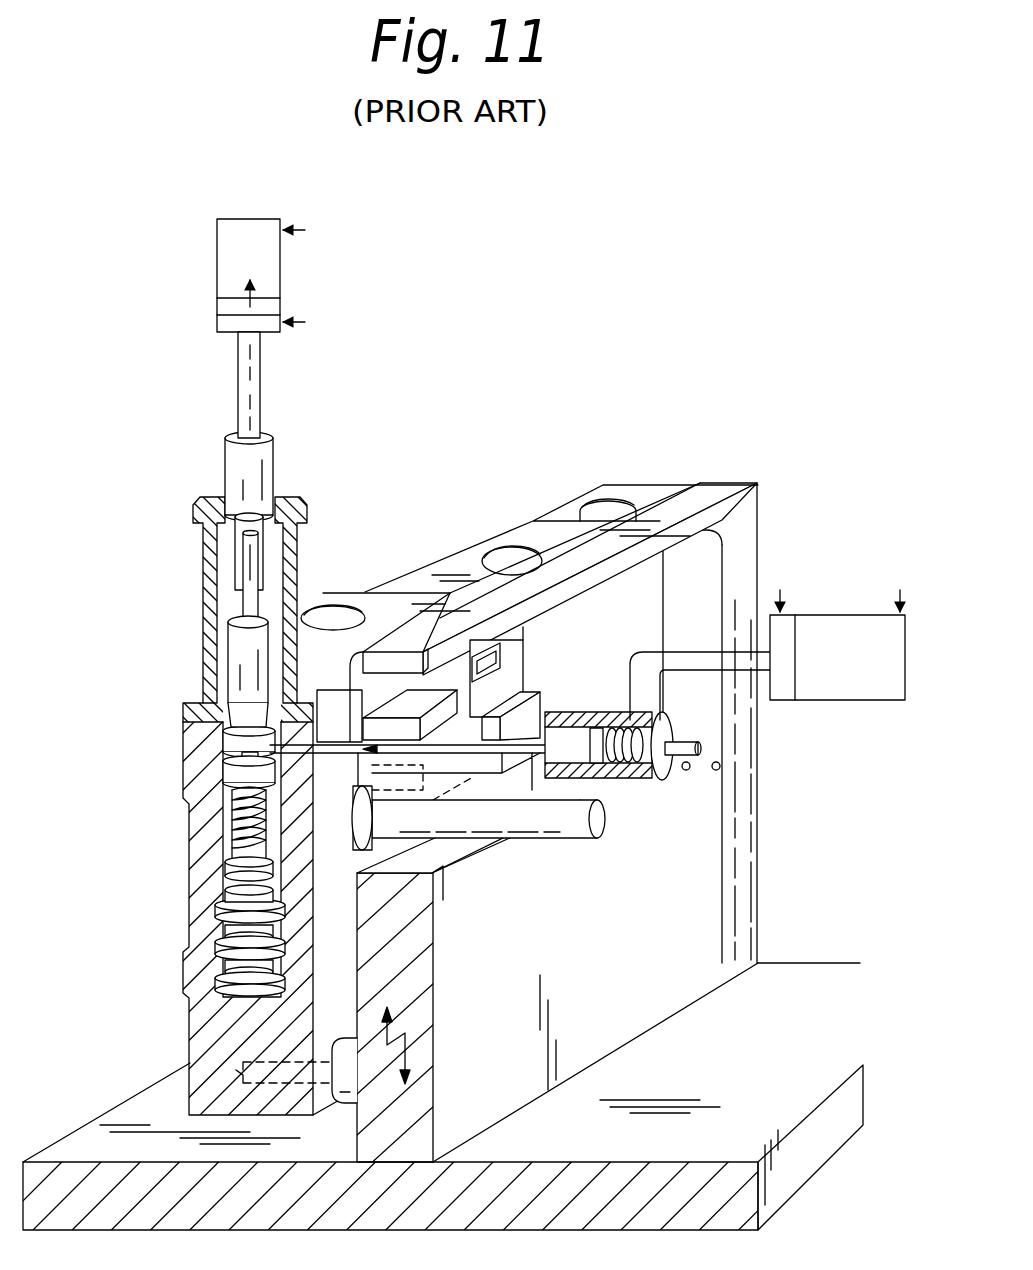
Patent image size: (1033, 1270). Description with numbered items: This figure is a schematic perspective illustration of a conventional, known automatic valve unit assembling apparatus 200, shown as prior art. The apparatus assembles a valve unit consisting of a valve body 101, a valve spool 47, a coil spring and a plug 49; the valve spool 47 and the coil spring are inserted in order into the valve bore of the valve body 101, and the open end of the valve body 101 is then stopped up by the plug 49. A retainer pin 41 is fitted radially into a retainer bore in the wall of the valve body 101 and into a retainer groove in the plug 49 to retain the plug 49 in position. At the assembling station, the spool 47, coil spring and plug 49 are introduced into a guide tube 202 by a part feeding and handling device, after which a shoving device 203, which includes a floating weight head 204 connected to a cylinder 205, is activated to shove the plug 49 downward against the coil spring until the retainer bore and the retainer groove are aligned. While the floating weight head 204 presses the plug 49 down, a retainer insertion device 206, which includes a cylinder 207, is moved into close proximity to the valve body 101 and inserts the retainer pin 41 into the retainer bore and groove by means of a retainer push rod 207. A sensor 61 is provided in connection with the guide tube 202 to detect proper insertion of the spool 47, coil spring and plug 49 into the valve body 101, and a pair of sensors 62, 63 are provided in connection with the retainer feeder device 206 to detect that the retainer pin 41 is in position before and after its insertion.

The cylinder 205 is at (282, 270).
The shoving device 203 is at (292, 398).
The automatic valve unit assembling apparatus 200 is at (464, 438).
The guide tube 202 is at (290, 490).
The retainer pin 41 is at (307, 747).
The cylinder / retainer push rod 207 is at (343, 747).
The floating weight head 204 is at (228, 641).
The sensor 61 is at (207, 678).
The plug 49 is at (228, 750).
The valve spool 47 is at (230, 868).
The valve body 101 is at (190, 1047).
The sensor 62 is at (686, 772).
The sensor 63 is at (716, 772).
The retainer insertion device 206 is at (790, 818).